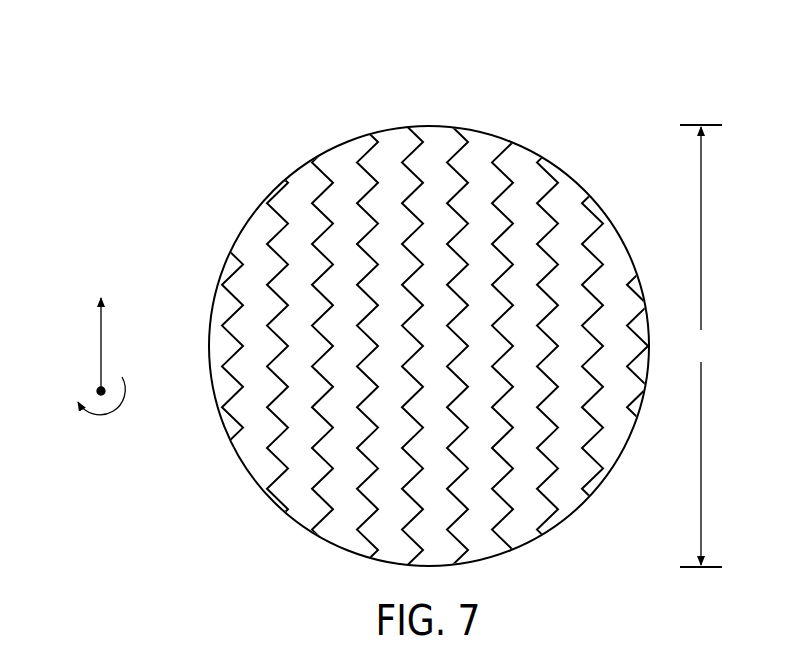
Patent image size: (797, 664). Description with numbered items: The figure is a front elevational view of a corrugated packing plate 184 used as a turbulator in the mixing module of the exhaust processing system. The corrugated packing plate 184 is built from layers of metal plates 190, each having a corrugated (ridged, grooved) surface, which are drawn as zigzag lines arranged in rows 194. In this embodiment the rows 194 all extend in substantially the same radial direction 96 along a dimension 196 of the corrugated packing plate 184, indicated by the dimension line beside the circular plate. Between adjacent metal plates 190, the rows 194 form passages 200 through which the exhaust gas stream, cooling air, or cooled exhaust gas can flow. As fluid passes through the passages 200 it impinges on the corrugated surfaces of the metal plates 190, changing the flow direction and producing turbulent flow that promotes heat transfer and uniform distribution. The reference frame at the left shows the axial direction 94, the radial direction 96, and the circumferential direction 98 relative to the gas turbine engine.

The corrugated packing plate 184 is at (381, 332).
The metal plate 190 is at (547, 335).
The row 194 is at (502, 335).
The dimension 196 is at (701, 346).
The passage 200 is at (412, 335).
The axial direction 94 is at (97, 390).
The radial direction 96 is at (103, 350).
The circumferential direction 98 is at (116, 414).